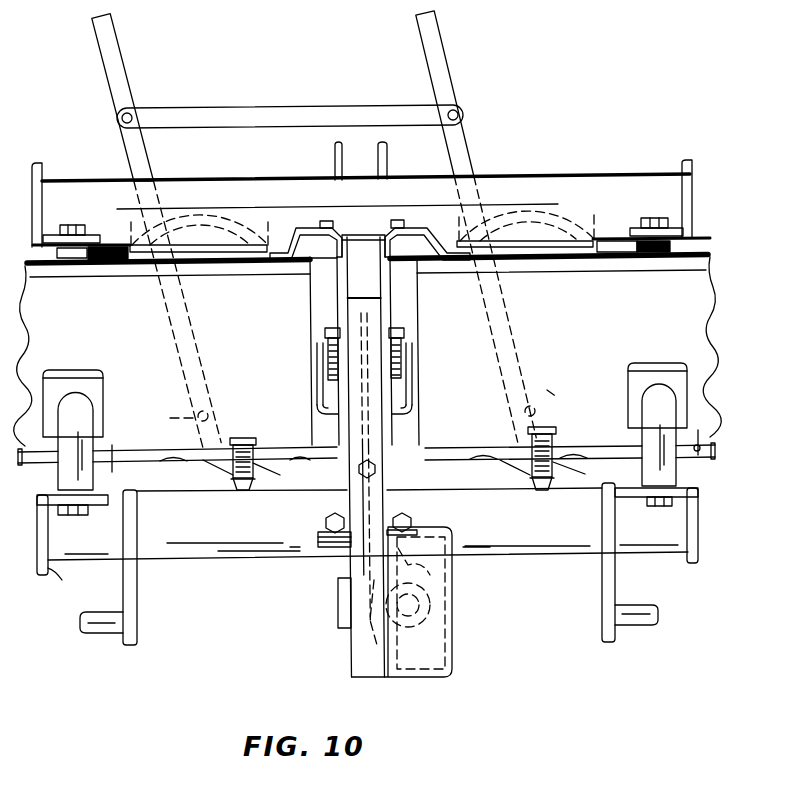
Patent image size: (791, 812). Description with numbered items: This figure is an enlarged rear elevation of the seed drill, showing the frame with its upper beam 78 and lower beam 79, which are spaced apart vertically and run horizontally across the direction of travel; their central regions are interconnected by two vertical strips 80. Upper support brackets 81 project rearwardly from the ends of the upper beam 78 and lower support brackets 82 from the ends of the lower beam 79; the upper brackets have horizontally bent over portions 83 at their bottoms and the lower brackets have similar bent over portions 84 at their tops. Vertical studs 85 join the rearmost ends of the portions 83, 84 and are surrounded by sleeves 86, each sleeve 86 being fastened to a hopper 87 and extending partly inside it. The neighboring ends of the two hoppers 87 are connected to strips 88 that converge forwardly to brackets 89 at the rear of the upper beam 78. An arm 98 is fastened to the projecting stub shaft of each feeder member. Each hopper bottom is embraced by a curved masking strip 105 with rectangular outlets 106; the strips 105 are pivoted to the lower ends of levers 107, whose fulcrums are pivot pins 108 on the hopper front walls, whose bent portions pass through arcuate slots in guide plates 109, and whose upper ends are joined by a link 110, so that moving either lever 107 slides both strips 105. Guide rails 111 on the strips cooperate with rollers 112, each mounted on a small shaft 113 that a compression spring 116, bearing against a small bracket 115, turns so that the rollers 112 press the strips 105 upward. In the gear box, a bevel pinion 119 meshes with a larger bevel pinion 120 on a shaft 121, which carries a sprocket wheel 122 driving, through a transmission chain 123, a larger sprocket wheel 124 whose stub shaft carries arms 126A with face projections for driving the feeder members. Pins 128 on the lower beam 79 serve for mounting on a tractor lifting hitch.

The upper beam 78 is at (203, 180).
The lower beam 79 is at (368, 564).
The vertical strips 80 is at (335, 156).
The upper support brackets 81 is at (39, 163).
The lower support brackets 82 is at (69, 581).
The horizontally bent over portions 83 is at (396, 375).
The horizontally bent over portions 84 is at (72, 535).
The vertical studs 85 is at (363, 214).
The sleeves 86 is at (87, 413).
The hopper 87 is at (412, 459).
The strips 88 is at (300, 227).
The brackets 89 is at (363, 220).
The arm 98 is at (368, 351).
The strip 105 is at (604, 424).
The rectangular outlets 106 is at (152, 438).
The levers 107 is at (123, 73).
The pivot pins 108 is at (360, 396).
The guide plates 109 is at (242, 203).
The link 110 is at (259, 110).
The guide rail 111 is at (513, 458).
The roller 112 is at (240, 490).
The small shaft 113 is at (247, 494).
The small bracket 115 is at (242, 438).
The compression spring 116 is at (556, 441).
The bevel pinion 119 is at (406, 640).
The larger bevel pinion 120 is at (453, 571).
The shaft 121 is at (411, 559).
The sprocket wheel 122 is at (377, 638).
The transmission chain 123 is at (369, 493).
The larger sprocket wheel 124 is at (366, 457).
The arms 126A is at (335, 408).
The pins 128 is at (93, 635).